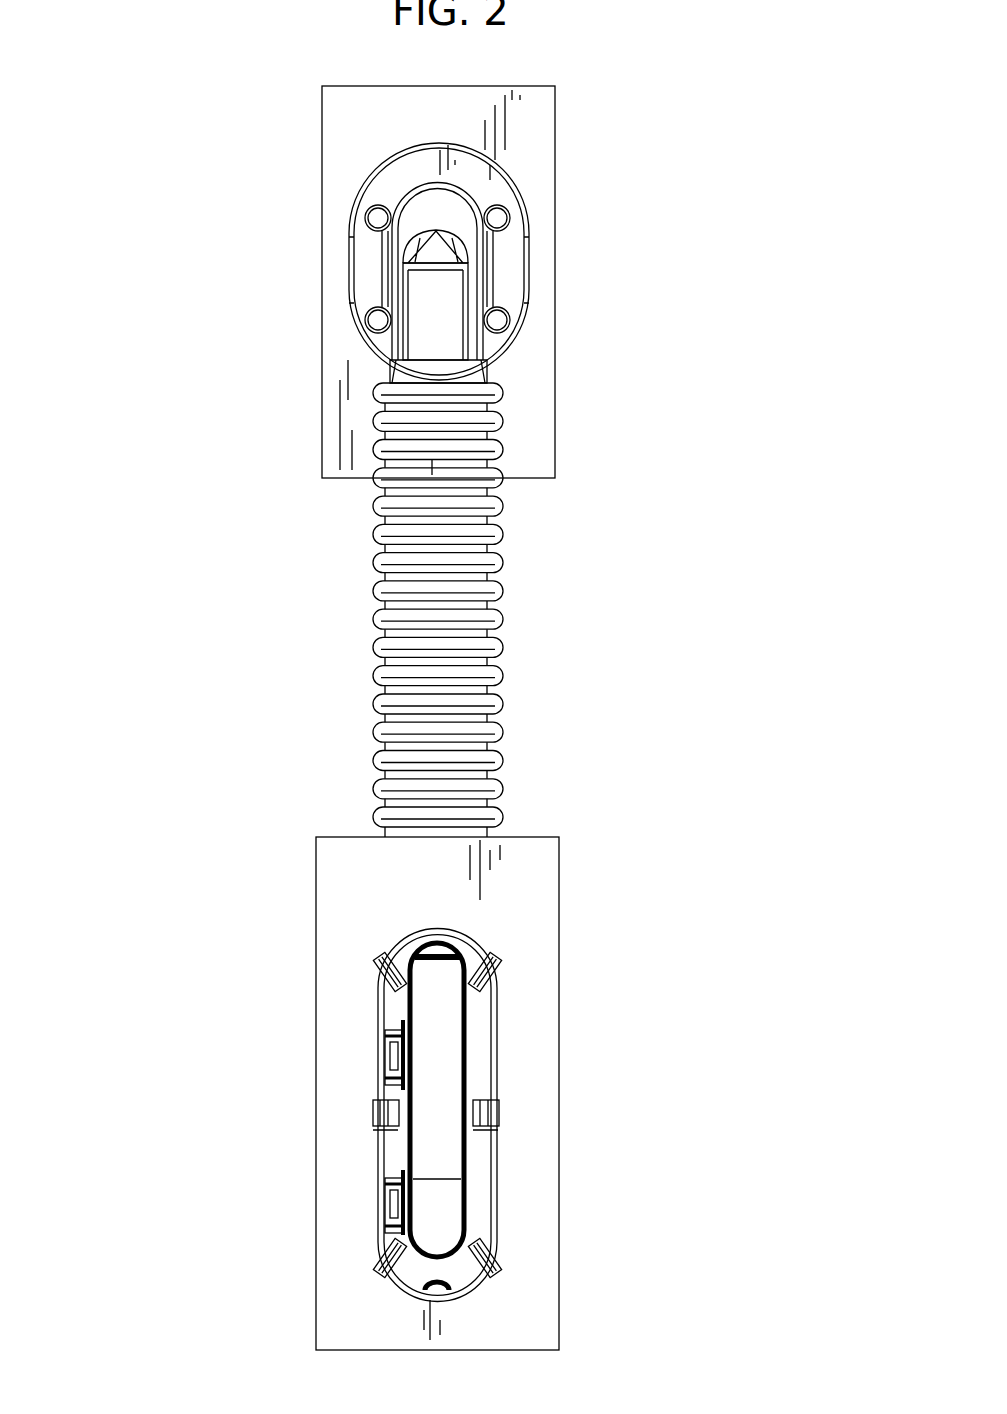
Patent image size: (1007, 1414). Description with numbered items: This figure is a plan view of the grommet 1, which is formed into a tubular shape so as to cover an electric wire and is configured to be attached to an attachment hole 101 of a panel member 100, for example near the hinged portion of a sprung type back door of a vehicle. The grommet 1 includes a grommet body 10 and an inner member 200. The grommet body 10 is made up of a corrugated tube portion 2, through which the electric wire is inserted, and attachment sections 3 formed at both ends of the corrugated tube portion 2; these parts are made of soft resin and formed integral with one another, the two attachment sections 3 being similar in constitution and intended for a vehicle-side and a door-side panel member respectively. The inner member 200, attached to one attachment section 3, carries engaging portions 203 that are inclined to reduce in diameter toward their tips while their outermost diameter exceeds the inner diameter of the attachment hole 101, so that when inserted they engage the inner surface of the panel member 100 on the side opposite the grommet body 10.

The grommet 1 is at (593, 553).
The corrugated tube portion 2 is at (489, 610).
The attachment section 3 is at (505, 267).
The grommet body 10 is at (504, 677).
The panel member 100 is at (533, 118).
The attachment hole 101 is at (492, 1071).
The inner member 200 is at (439, 1115).
The engaging portion 203 is at (380, 972).